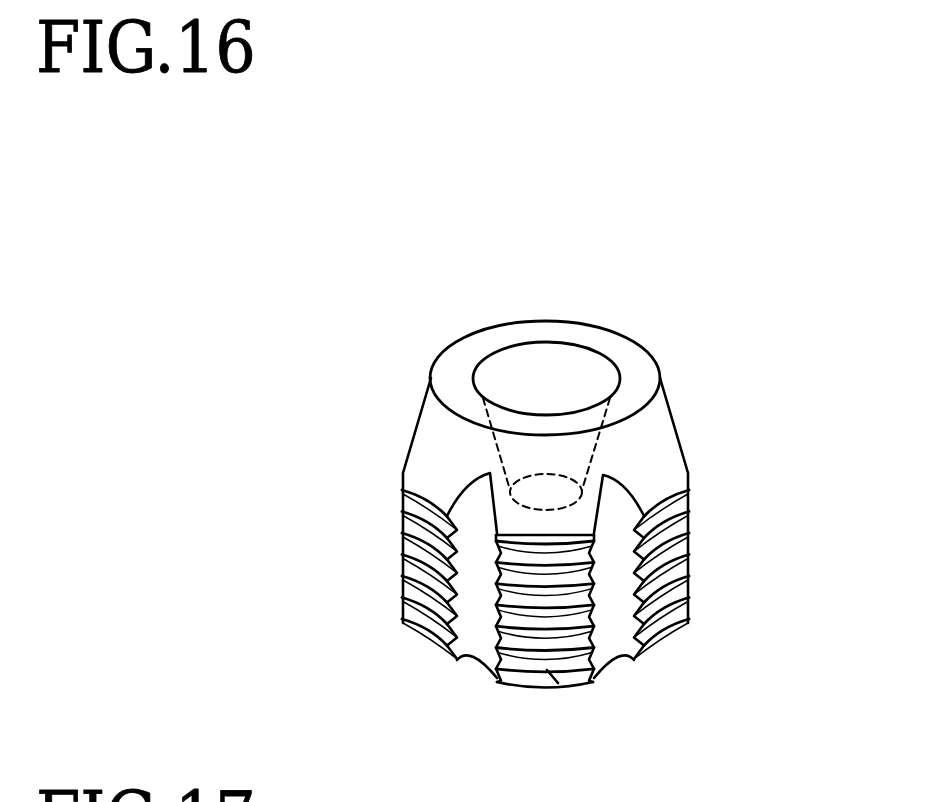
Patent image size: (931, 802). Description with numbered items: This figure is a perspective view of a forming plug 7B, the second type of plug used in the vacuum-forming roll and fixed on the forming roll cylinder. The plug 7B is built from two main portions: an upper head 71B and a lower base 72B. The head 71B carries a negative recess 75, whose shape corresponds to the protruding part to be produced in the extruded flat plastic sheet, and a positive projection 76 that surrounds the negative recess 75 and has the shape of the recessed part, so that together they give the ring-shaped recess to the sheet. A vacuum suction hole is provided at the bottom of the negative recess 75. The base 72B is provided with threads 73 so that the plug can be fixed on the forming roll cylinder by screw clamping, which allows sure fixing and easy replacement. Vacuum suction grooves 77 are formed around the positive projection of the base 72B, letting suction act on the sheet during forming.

The forming plug 7B is at (525, 276).
The head 71B is at (663, 462).
The base 72B is at (688, 553).
The threads 73 is at (558, 683).
The negative recess 75 is at (568, 383).
The positive projection 76 is at (458, 367).
The vacuum suction grooves 77 is at (477, 632).